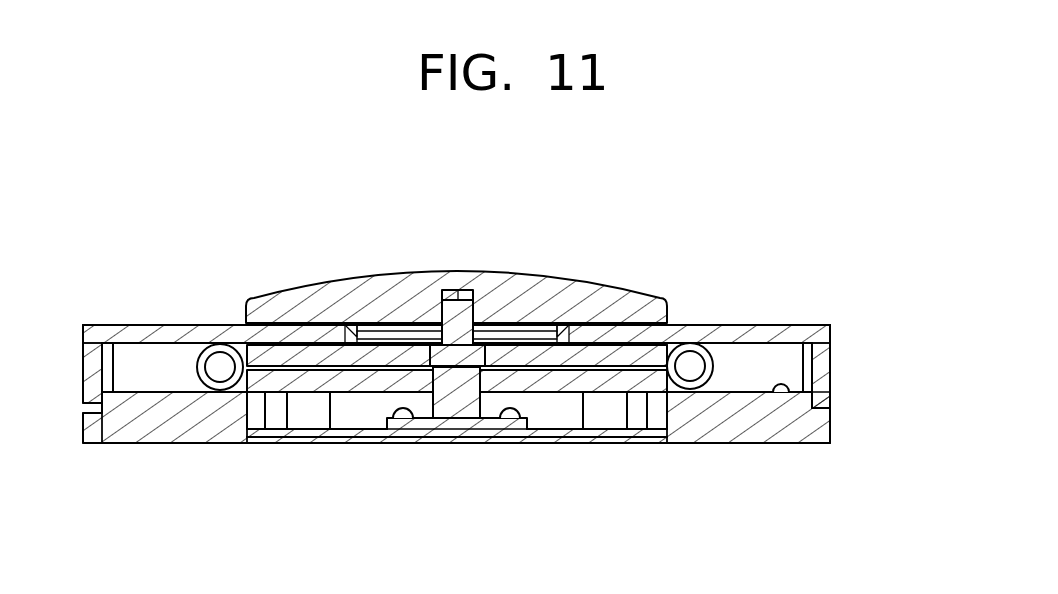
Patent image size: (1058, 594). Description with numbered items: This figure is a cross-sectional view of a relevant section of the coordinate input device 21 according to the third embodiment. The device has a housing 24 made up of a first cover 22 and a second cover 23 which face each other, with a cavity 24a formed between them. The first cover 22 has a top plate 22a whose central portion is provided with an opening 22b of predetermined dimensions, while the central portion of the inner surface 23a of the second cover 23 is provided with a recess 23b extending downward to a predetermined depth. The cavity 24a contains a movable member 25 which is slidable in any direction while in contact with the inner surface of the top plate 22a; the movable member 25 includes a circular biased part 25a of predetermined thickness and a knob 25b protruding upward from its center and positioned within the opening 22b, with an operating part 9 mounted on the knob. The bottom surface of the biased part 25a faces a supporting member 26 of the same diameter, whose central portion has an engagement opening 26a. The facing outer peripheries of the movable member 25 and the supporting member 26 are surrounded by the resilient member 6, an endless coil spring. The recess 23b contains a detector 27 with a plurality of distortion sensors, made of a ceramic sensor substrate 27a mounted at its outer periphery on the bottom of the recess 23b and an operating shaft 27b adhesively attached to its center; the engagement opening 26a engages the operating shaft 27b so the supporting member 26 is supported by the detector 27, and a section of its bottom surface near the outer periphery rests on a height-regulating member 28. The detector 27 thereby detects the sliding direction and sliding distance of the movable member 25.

The coordinate input device 21 is at (118, 275).
The resilient member 6 is at (221, 364).
The operating part 9 is at (278, 312).
The first cover 22 is at (800, 314).
The top plate 22a is at (183, 325).
The opening 22b is at (356, 322).
The second cover 23 is at (739, 437).
The inner surface 23a is at (788, 397).
The recess 23b is at (660, 434).
The housing 24 is at (853, 323).
The cavity 24a is at (783, 365).
The movable member 25 is at (442, 300).
The biased part 25a is at (537, 352).
The knob 25b is at (467, 343).
The supporting member 26 is at (608, 366).
The engagement opening 26a is at (414, 331).
The detector 27 is at (448, 423).
The sensor substrate 27a is at (399, 418).
The operating shaft 27b is at (469, 430).
The height-regulating member 28 is at (310, 415).